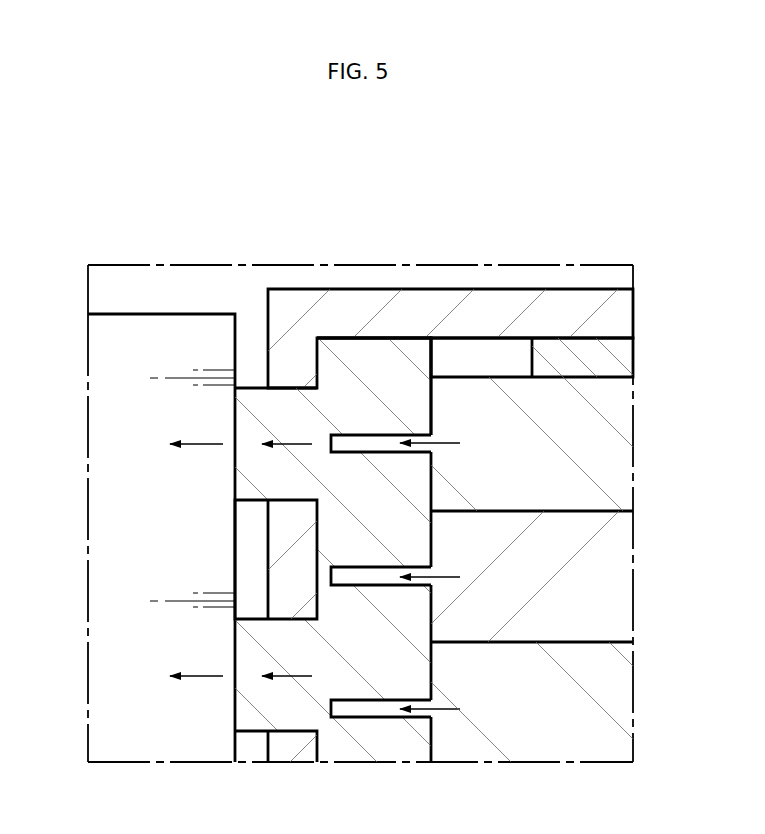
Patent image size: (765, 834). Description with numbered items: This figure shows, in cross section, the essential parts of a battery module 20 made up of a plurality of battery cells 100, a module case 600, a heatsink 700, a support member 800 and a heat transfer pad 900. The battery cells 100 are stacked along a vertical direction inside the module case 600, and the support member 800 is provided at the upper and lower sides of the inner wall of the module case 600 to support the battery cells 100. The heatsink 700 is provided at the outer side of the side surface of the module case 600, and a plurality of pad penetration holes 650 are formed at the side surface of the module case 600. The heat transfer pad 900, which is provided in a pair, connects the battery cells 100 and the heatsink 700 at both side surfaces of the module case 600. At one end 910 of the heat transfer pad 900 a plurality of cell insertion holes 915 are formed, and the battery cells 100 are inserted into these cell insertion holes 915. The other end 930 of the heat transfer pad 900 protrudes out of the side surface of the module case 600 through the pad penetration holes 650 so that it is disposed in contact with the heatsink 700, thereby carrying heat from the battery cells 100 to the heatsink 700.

The battery module 20 is at (162, 187).
The battery cells 100 is at (620, 440).
The module case 600 is at (620, 313).
The pad penetration holes 650 is at (295, 389).
The heatsink 700 is at (124, 342).
The support member 800 is at (620, 356).
The heat transfer pad 900 is at (343, 333).
The one end of the heat transfer pad 910 is at (431, 357).
The cell insertion holes 915 is at (360, 432).
The other end of the heat transfer pad 930 is at (255, 484).